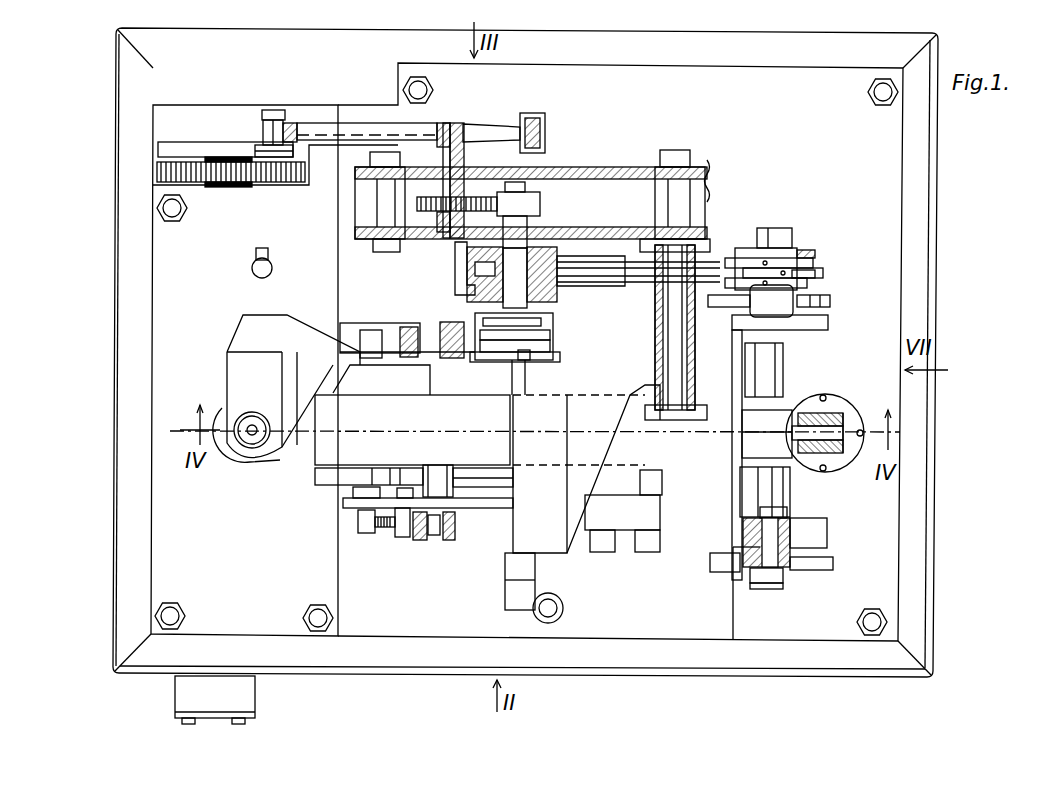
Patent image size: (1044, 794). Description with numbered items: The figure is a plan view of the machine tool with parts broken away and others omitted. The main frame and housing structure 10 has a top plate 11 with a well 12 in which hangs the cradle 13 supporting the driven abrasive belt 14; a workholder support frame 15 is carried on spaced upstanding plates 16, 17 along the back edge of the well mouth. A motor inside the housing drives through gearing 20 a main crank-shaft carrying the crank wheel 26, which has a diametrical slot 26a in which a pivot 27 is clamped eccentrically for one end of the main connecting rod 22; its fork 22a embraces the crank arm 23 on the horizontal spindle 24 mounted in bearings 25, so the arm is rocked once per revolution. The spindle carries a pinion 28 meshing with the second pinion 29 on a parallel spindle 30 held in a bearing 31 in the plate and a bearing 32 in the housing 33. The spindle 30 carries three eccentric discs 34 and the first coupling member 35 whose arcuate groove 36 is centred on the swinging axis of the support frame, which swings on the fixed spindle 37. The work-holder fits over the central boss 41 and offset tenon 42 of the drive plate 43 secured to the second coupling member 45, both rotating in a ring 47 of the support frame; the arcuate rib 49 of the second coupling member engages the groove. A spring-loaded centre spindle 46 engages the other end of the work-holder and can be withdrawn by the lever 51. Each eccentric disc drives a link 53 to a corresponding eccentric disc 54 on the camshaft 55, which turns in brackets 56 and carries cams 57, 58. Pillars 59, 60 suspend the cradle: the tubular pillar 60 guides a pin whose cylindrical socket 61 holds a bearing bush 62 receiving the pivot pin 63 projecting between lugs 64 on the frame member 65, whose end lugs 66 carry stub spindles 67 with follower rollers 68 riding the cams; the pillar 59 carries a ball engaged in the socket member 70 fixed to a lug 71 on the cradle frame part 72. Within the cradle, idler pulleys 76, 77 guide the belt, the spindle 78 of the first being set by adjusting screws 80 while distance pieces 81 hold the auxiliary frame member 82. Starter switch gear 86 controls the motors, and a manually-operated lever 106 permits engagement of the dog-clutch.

The main frame and housing structure 10 is at (278, 668).
The top plate 11 is at (290, 580).
The well 12 is at (385, 600).
The cradle 13 is at (605, 525).
The abrasive belt 14 is at (320, 448).
The workholder support frame 15 is at (625, 395).
The upstanding plate 16 is at (617, 167).
The upstanding plate 17 is at (612, 228).
The gearing 20 is at (280, 185).
The main connecting rod 22 is at (358, 122).
The fork 22a is at (528, 112).
The crank arm 23 is at (485, 124).
The horizontal spindle 24 is at (450, 165).
The bearings 25 is at (440, 121).
The crank wheel 26 is at (182, 140).
The diametrical slot 26a is at (262, 138).
The pivot 27 is at (290, 121).
The pinion 28 is at (425, 212).
The second pinion 29 is at (527, 195).
The spindle 30 is at (527, 225).
The bearing 31 is at (540, 240).
The bearing 32 is at (470, 270).
The housing 33 is at (455, 270).
The eccentric discs 34 is at (605, 265).
The first coupling member 35 is at (545, 312).
The arcuate groove 36 is at (540, 338).
The fixed spindle 37 is at (705, 335).
The central boss 41 is at (520, 362).
The offset tenon 42 is at (540, 365).
The drive plate 43 is at (505, 358).
The second coupling member 45 is at (525, 322).
The centre spindle 46 is at (505, 520).
The ring 47 is at (478, 340).
The arcuate rib 49 is at (530, 360).
The lever 51 is at (535, 608).
The link 53 is at (625, 265).
The eccentric disc 54 is at (795, 248).
The camshaft 55 is at (775, 370).
The brackets 56 is at (800, 325).
The cam 57 is at (833, 563).
The cam 58 is at (793, 300).
The pillar 59 is at (255, 450).
The pillar 60 is at (825, 413).
The cylindrical socket 61 is at (845, 410).
The bearing bush 62 is at (830, 455).
The pivot pin 63 is at (850, 450).
The lugs 64 is at (790, 410).
The frame member 65 is at (735, 495).
The lugs 66 is at (793, 315).
The stub spindles 67 is at (800, 332).
The follower roller 68 is at (790, 295).
The socket member 70 is at (228, 455).
The lug 71 is at (235, 380).
The cradle frame part 72 is at (295, 345).
The idler pulley 76 is at (330, 480).
The idler pulley 77 is at (715, 480).
The spindle 78 is at (366, 534).
The adjusting screws 80 is at (420, 325).
The distance pieces 81 is at (435, 475).
The auxiliary frame member 82 is at (488, 508).
The starter switch gear 86 is at (185, 690).
The manually-operated lever 106 is at (252, 270).